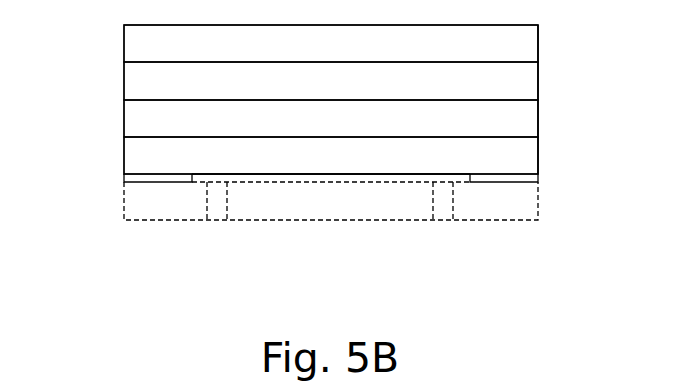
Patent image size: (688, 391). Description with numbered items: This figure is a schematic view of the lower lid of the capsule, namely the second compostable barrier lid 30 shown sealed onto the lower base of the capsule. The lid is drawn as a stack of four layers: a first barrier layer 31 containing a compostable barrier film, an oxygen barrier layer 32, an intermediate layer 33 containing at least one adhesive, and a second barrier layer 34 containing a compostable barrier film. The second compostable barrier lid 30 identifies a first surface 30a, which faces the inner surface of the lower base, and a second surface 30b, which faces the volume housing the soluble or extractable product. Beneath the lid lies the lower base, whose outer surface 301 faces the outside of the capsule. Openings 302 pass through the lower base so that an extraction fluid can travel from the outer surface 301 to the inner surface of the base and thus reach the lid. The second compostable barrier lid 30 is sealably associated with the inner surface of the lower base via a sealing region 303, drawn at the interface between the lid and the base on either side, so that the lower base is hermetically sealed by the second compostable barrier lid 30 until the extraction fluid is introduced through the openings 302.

The second compostable barrier lid 30 is at (103, 26).
The first barrier layer 31 is at (331, 155).
The oxygen barrier layer 32 is at (331, 118).
The intermediate layer 33 is at (331, 81).
The second barrier layer 34 is at (331, 43).
The first surface 30a is at (343, 174).
The second surface 30b is at (500, 141).
The outer surface 301 is at (513, 224).
The openings 302 is at (227, 220).
The sealing region 303 is at (124, 178).